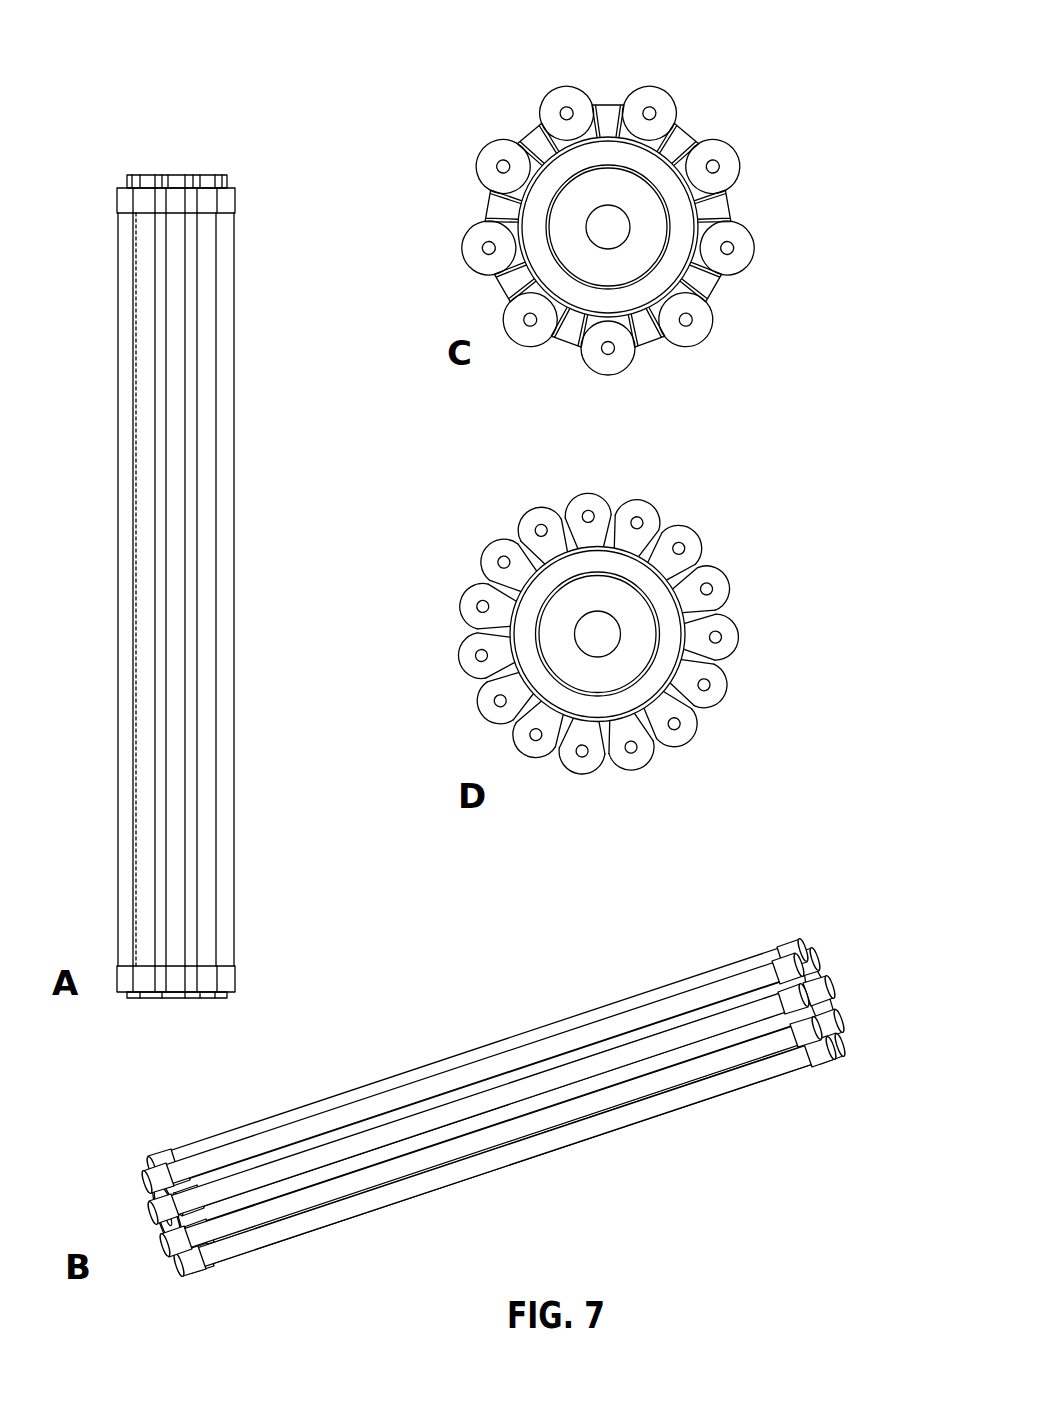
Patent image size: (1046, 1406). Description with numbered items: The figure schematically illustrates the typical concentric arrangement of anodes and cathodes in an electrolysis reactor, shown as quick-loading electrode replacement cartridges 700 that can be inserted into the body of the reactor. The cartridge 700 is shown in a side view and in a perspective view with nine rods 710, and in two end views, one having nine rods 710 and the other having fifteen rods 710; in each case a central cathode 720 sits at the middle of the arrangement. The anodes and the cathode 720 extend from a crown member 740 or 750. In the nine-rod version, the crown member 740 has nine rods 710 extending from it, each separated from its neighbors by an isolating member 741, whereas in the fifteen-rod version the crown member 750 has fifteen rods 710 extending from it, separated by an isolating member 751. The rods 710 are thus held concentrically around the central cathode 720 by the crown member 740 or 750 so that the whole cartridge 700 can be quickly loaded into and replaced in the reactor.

The rod assembly 700 is at (243, 163).
The rod 710 is at (733, 152).
The central cathode 720 is at (568, 172).
The crown member 740 is at (708, 108).
The isolating member 741 is at (708, 285).
The crown member 750 is at (712, 520).
The isolating member 751 is at (707, 667).